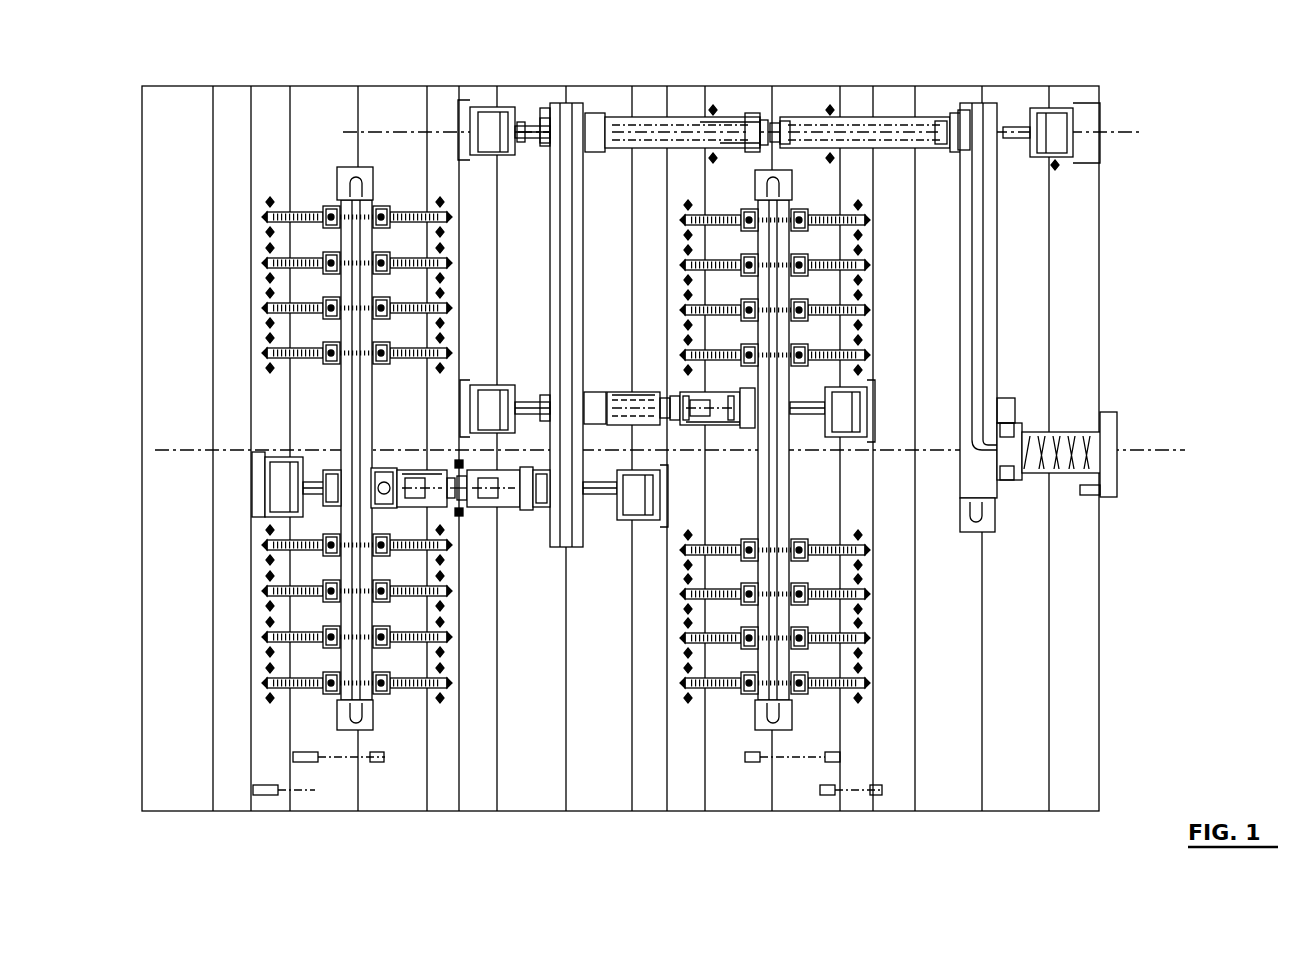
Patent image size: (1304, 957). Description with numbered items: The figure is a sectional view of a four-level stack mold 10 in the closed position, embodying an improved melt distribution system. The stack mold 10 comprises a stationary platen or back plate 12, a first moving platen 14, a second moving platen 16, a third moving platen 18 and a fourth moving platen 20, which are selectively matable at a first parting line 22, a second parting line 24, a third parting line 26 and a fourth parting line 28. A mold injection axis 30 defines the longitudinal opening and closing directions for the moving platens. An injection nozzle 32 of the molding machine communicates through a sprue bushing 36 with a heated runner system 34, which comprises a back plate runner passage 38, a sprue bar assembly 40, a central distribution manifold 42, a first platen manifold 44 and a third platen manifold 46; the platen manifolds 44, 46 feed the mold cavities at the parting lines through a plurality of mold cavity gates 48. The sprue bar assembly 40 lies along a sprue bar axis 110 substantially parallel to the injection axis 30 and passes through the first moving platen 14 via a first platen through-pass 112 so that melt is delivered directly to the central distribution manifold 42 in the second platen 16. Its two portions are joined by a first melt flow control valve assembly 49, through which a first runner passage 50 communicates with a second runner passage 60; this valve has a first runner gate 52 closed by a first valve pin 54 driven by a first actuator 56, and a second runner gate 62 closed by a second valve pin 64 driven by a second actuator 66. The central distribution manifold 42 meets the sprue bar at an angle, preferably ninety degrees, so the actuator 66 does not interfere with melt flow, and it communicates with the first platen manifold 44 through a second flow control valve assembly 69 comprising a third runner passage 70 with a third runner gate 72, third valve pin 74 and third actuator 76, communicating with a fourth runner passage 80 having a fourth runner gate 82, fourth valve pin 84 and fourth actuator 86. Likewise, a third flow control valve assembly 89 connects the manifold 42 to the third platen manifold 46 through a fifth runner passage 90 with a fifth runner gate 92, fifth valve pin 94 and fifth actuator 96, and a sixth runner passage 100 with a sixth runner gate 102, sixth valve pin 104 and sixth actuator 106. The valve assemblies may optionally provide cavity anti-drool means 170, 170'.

The stack mold 10 is at (125, 130).
The stationary platen 12 is at (1008, 818).
The first moving platen 14 is at (748, 810).
The second moving platen 16 is at (545, 810).
The third moving platen 18 is at (340, 810).
The fourth moving platen 20 is at (185, 810).
The first parting line 22 is at (873, 820).
The second parting line 24 is at (667, 818).
The third parting line 26 is at (459, 818).
The fourth parting line 28 is at (251, 818).
The mold injection axis 30 is at (168, 450).
The injection nozzle 32 is at (1060, 432).
The heated runner system 34 is at (997, 268).
The sprue bushing 36 is at (1010, 480).
The back plate runner passage 38 is at (997, 325).
The sprue bar assembly 40 is at (818, 88).
The central distribution manifold 42 is at (520, 207).
The first platen manifold 44 is at (792, 500).
The third platen manifold 46 is at (338, 400).
The mold cavity gates 48 is at (445, 262).
The first melt flow control valve assembly 49 is at (797, 75).
The first runner passage 50 is at (920, 118).
The first runner gate 52 is at (795, 150).
The first valve pin 54 is at (870, 153).
The first actuator 56 is at (1065, 103).
The second runner passage 60 is at (655, 108).
The second runner gate 62 is at (770, 150).
The second valve pin 64 is at (688, 150).
The second actuator 66 is at (497, 105).
The second flow control valve assembly 69 is at (668, 400).
The third runner passage 70 is at (615, 392).
The third runner gate 72 is at (660, 425).
The third valve pin 74 is at (598, 425).
The third actuator 76 is at (495, 385).
The fourth runner passage 80 is at (730, 428).
The fourth runner gate 82 is at (690, 425).
The fourth valve pin 84 is at (718, 425).
The fourth actuator 86 is at (867, 393).
The third flow control valve assembly 89 is at (455, 462).
The fifth runner passage 90 is at (518, 520).
The fifth runner gate 92 is at (455, 500).
The fifth valve pin 94 is at (510, 508).
The fifth actuator 96 is at (640, 535).
The sixth runner passage 100 is at (417, 507).
The sixth runner gate 102 is at (462, 508).
The sixth valve pin 104 is at (410, 470).
The sixth actuator 106 is at (265, 500).
The sprue bar axis 110 is at (352, 130).
The first platen through-pass 112 is at (738, 128).
The cavity anti-drool means 170 is at (730, 80).
The cavity anti-drool means 170' is at (637, 338).